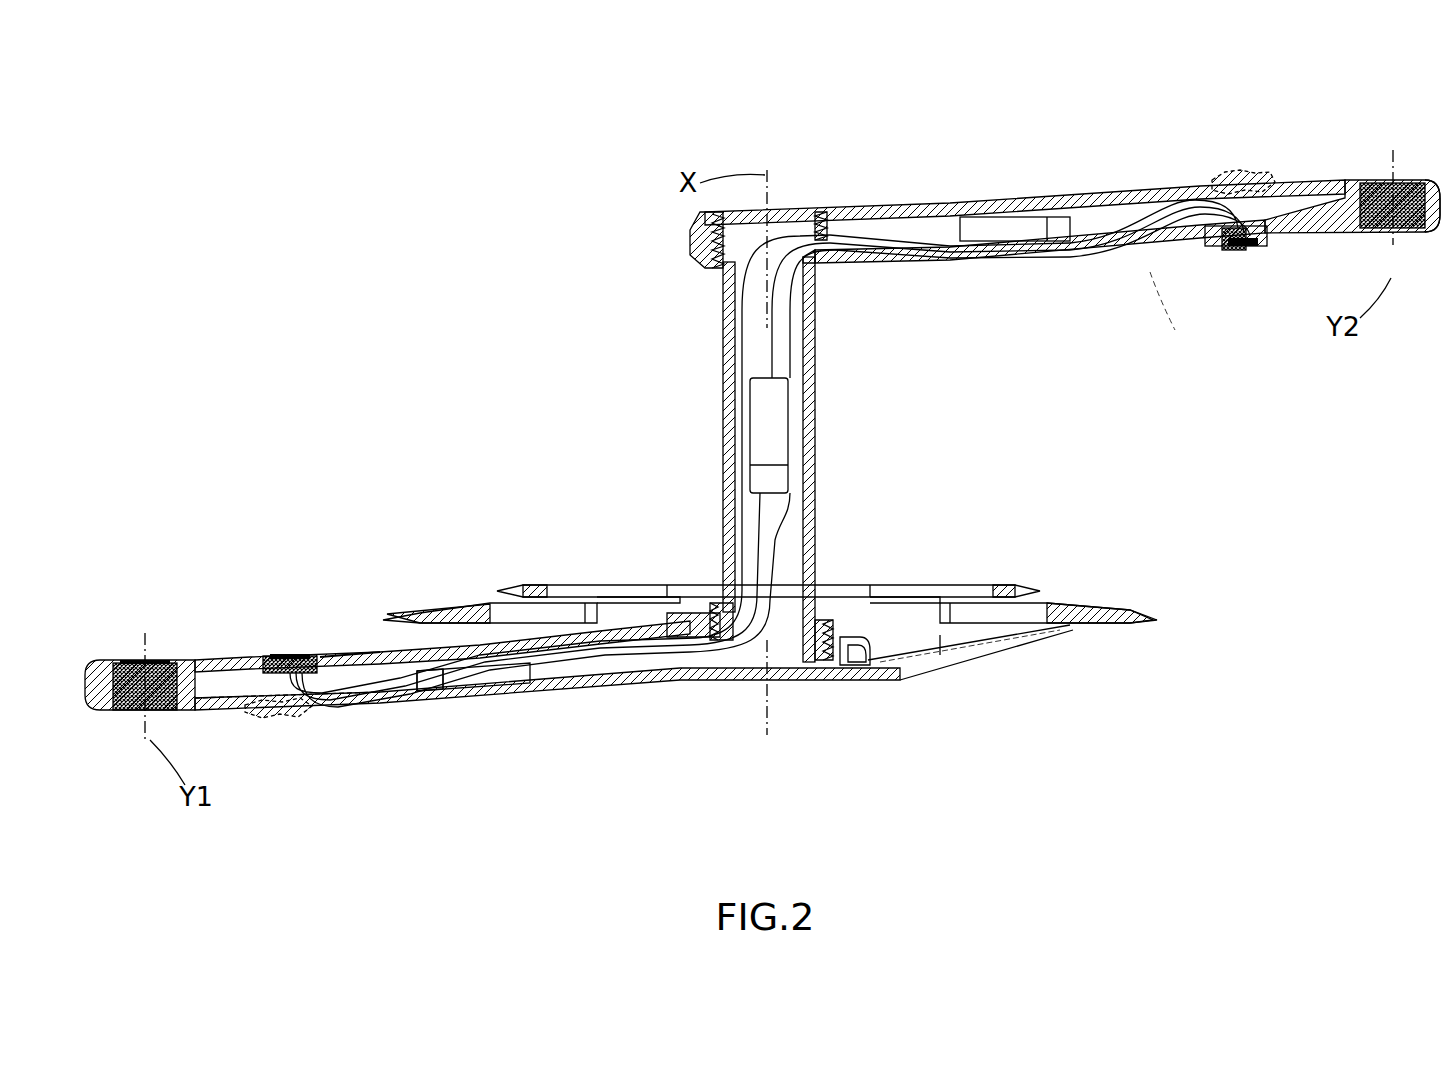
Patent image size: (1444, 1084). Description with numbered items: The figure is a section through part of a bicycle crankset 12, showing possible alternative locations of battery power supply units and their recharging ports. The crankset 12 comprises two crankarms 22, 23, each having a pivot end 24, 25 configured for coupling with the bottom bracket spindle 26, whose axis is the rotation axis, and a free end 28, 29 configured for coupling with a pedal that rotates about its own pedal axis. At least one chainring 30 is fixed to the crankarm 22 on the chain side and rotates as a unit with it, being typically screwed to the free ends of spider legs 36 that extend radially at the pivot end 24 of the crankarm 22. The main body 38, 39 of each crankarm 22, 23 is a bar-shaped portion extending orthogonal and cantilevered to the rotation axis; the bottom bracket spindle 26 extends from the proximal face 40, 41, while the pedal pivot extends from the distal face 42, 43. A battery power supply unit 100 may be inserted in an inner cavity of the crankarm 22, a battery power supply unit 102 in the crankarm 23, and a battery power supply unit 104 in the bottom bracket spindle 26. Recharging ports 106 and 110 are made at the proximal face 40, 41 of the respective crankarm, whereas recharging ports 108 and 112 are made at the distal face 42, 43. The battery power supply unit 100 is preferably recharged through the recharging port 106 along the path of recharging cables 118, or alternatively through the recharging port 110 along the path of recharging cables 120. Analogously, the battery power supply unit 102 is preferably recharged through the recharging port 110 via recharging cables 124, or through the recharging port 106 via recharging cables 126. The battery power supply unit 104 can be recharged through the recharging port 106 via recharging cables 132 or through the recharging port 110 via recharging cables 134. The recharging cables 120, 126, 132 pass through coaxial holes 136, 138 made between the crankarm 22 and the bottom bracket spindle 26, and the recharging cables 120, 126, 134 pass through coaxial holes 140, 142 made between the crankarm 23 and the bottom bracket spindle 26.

The crankset 12 is at (515, 375).
The crankarm 22 is at (160, 605).
The crankarm 23 is at (1397, 296).
The pivot end 24 is at (799, 706).
The pivot end 25 is at (683, 140).
The bottom bracket spindle 26 is at (683, 392).
The free end 28 is at (121, 737).
The free end 29 is at (1383, 132).
The chainring 30 is at (572, 588).
The spider legs 36 is at (945, 650).
The main body 38 is at (469, 733).
The main body 39 is at (1150, 272).
The proximal face 40 is at (370, 654).
The proximal face 41 is at (960, 265).
The distal face 42 is at (350, 712).
The distal face 43 is at (1015, 200).
The battery power supply unit 100 is at (488, 690).
The battery power supply unit 102 is at (1022, 245).
The battery power supply unit 104 is at (778, 420).
The recharging port 106 is at (288, 658).
The recharging port 108 is at (283, 720).
The recharging port 110 is at (1240, 250).
The recharging port 112 is at (1240, 170).
The recharging cables 118 is at (415, 700).
The recharging cables 120 is at (612, 688).
The recharging cables 124 is at (1148, 190).
The recharging cables 126 is at (945, 203).
The recharging cables 132 is at (760, 505).
The recharging cables 134 is at (768, 330).
The coaxial hole 136 is at (702, 658).
The coaxial hole 138 is at (726, 650).
The coaxial hole 140 is at (826, 212).
The coaxial hole 142 is at (803, 210).